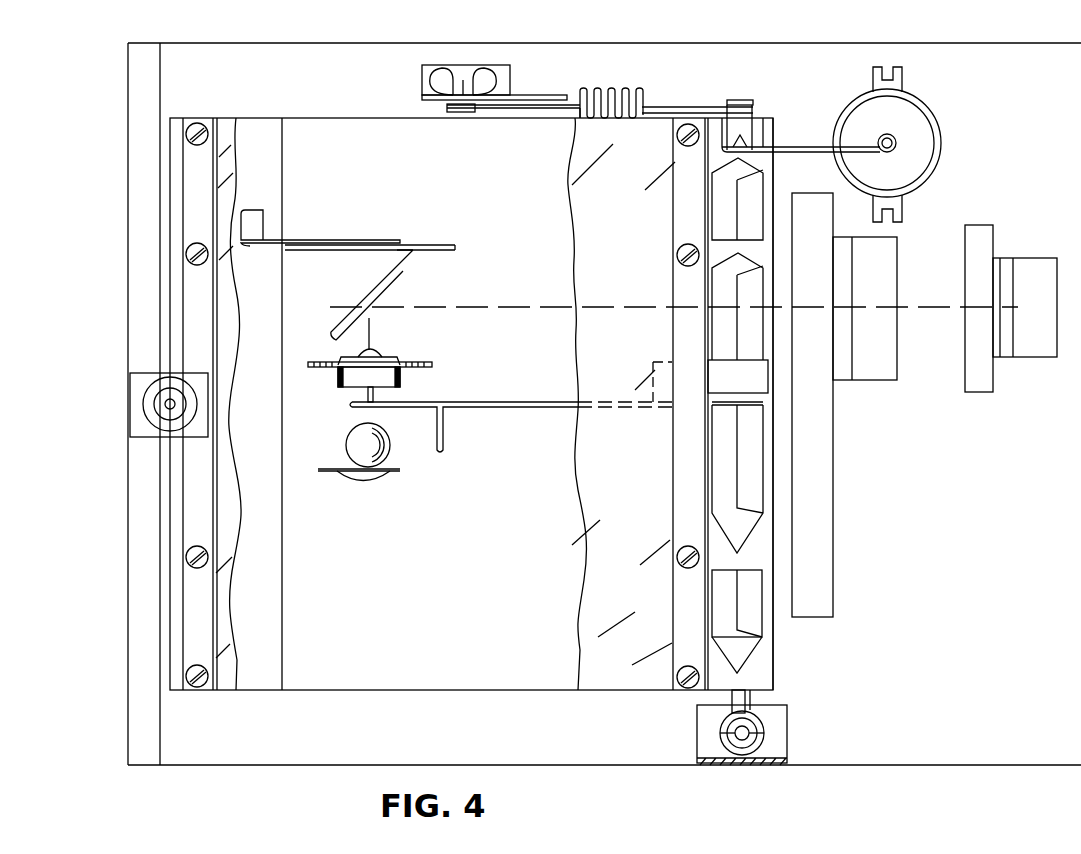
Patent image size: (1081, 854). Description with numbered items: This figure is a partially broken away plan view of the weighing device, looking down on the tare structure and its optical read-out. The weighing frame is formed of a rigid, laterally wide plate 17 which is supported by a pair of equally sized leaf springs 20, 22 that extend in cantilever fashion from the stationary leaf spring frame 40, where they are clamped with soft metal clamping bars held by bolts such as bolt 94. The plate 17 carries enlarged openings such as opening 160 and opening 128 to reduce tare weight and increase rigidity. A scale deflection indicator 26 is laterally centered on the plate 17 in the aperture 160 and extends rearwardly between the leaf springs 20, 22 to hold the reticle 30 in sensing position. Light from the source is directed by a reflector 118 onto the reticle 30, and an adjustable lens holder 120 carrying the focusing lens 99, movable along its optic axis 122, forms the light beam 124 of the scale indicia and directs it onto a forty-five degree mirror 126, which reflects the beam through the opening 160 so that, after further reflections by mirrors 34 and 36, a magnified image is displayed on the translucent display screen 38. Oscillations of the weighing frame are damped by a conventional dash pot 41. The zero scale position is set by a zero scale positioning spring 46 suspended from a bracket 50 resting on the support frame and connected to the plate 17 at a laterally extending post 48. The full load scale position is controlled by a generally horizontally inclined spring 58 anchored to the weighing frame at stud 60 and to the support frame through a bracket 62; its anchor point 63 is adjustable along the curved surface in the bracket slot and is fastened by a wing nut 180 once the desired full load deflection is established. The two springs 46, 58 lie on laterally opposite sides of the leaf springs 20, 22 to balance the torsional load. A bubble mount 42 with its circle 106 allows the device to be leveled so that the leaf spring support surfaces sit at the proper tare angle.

The plate 17 is at (773, 190).
The leaf spring 20 is at (580, 572).
The leaf spring 22 is at (390, 690).
The scale deflection indicator 26 is at (480, 402).
The reticle 30 is at (362, 408).
The mirror 34 is at (1035, 258).
The mirror 36 is at (895, 240).
The translucent display screen 38 is at (990, 228).
The stationary leaf spring frame 40 is at (272, 605).
The dash pot 41 is at (940, 150).
The bubble mount 42 is at (135, 422).
The zero scale positioning spring 46 is at (760, 722).
The post 48 is at (752, 700).
The bracket 50 is at (700, 745).
The spring 58 is at (618, 88).
The stud 60 is at (745, 100).
The bracket 62 is at (535, 96).
The anchor point 63 is at (460, 112).
The bolt 94 is at (190, 670).
The focusing lens 99 is at (398, 378).
The circle 106 is at (166, 404).
The reflector 118 is at (368, 484).
The lens holder 120 is at (435, 365).
The optic axis 122 is at (368, 395).
The light beam 124 is at (467, 307).
The 45° mirror 126 is at (336, 342).
The opening 128 is at (720, 200).
The opening 160 is at (725, 333).
The wing nut 180 is at (445, 78).